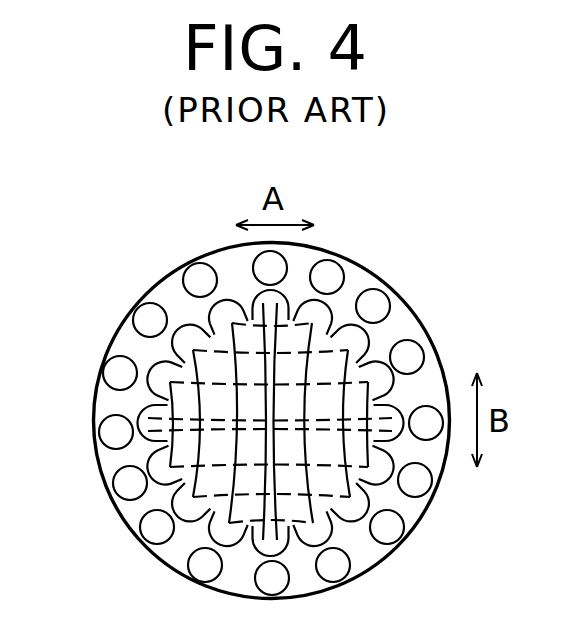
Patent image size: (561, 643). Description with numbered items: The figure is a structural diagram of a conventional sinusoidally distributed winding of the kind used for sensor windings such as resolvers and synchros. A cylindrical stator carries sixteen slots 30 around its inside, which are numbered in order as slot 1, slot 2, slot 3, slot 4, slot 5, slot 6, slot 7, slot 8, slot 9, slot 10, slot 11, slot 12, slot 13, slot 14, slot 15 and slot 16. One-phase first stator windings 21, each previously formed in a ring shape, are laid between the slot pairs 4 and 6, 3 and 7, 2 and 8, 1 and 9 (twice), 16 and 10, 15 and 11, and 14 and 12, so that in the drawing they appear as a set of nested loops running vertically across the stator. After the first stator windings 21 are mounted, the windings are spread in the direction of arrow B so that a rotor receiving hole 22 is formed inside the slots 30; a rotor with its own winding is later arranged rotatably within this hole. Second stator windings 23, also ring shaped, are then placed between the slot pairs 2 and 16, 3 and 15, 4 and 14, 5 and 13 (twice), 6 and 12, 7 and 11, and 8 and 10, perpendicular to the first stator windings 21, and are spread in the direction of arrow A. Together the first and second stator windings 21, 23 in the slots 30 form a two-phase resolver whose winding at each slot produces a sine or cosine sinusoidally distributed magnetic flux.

The first stator winding 21 is at (258, 353).
The rotor receiving hole 22 is at (302, 367).
The second stator winding 23 is at (227, 383).
The slot 30 is at (360, 340).
The slot No. 1 is at (270, 268).
The slot No. 2 is at (327, 277).
The slot No. 3 is at (373, 306).
The slot No. 4 is at (407, 357).
The slot No. 5 is at (426, 423).
The slot No. 6 is at (415, 480).
The slot No. 7 is at (387, 527).
The slot No. 8 is at (333, 565).
The slot No. 9 is at (272, 578).
The slot No. 10 is at (205, 565).
The slot No. 11 is at (157, 527).
The slot No. 12 is at (130, 483).
The slot No. 13 is at (116, 432).
The slot No. 14 is at (120, 373).
The slot No. 15 is at (150, 320).
The slot No. 16 is at (200, 280).